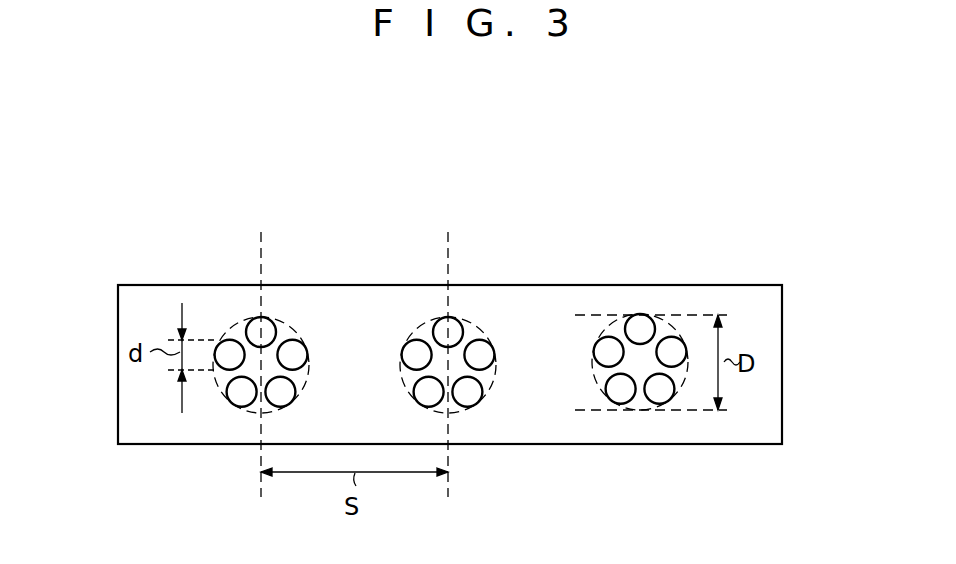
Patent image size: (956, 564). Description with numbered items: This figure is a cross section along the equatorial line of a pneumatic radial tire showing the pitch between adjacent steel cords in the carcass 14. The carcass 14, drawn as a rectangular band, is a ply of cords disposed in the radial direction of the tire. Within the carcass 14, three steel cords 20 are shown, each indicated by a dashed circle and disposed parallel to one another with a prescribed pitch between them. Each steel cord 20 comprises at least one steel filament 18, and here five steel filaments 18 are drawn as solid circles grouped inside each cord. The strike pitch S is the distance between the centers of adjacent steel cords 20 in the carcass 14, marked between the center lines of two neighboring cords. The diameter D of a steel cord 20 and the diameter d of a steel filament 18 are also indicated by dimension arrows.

The carcass 14 is at (352, 293).
The steel filament 18 is at (225, 362).
The steel cord 20 is at (288, 327).